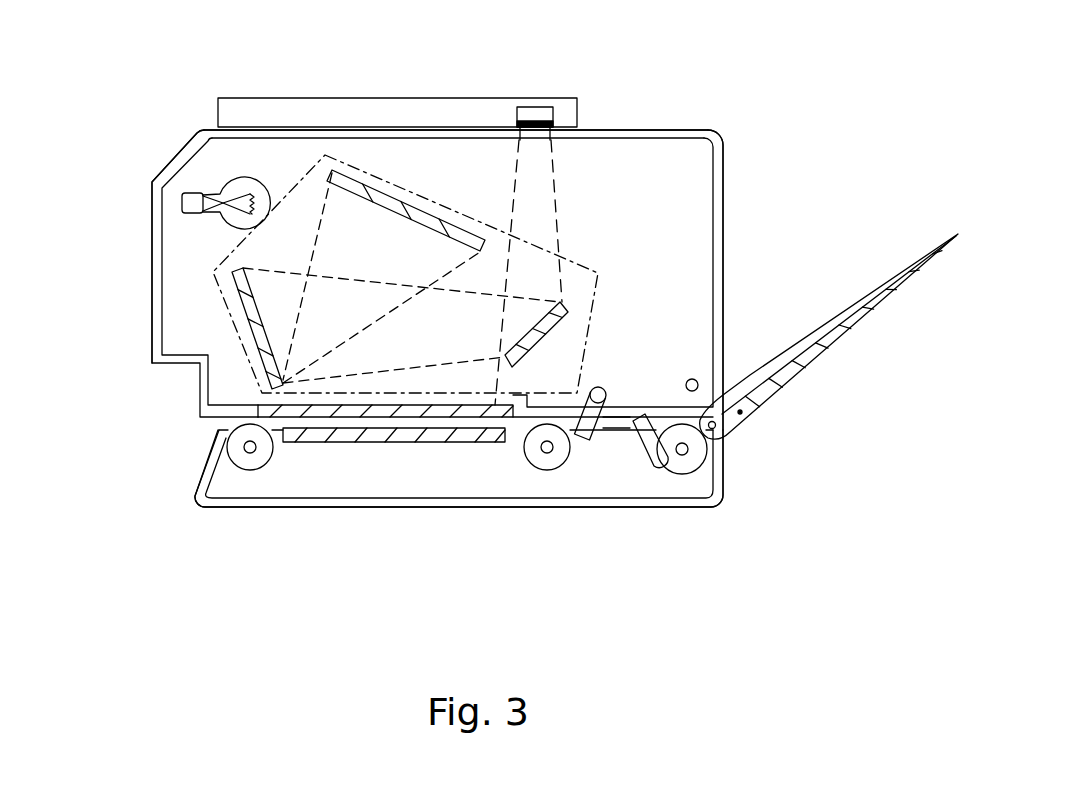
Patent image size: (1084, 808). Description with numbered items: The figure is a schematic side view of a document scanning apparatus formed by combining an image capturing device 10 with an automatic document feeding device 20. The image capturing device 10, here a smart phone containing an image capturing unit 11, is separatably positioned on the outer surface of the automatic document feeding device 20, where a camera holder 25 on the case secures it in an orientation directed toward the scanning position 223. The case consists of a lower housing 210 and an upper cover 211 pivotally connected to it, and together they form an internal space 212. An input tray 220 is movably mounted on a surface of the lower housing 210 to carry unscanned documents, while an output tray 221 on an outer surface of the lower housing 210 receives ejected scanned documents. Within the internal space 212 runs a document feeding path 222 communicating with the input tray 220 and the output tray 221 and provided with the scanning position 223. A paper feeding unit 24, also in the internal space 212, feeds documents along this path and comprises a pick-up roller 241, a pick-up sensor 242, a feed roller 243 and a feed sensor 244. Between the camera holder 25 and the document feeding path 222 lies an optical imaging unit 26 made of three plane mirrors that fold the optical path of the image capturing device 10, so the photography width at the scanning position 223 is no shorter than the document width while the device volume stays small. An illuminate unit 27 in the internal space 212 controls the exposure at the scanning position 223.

The image capturing device 10 is at (328, 107).
The image capturing unit 11 is at (533, 117).
The automatic document feeding device 20 is at (73, 175).
The paper feeding unit 24 is at (510, 578).
The camera holder 25 is at (280, 128).
The optical imaging unit 26 is at (500, 223).
The illuminate unit 27 is at (198, 203).
The lower housing 210 is at (207, 473).
The upper cover 211 is at (155, 263).
The internal space 212 is at (658, 217).
The input tray 220 is at (850, 307).
The output tray 221 is at (217, 423).
The document feeding path 222 is at (613, 423).
The scanning position 223 is at (337, 423).
The pick-up roller 241 is at (695, 458).
The pick-up sensor 242 is at (650, 458).
The feed roller 243 is at (260, 452).
The feed sensor 244 is at (590, 410).